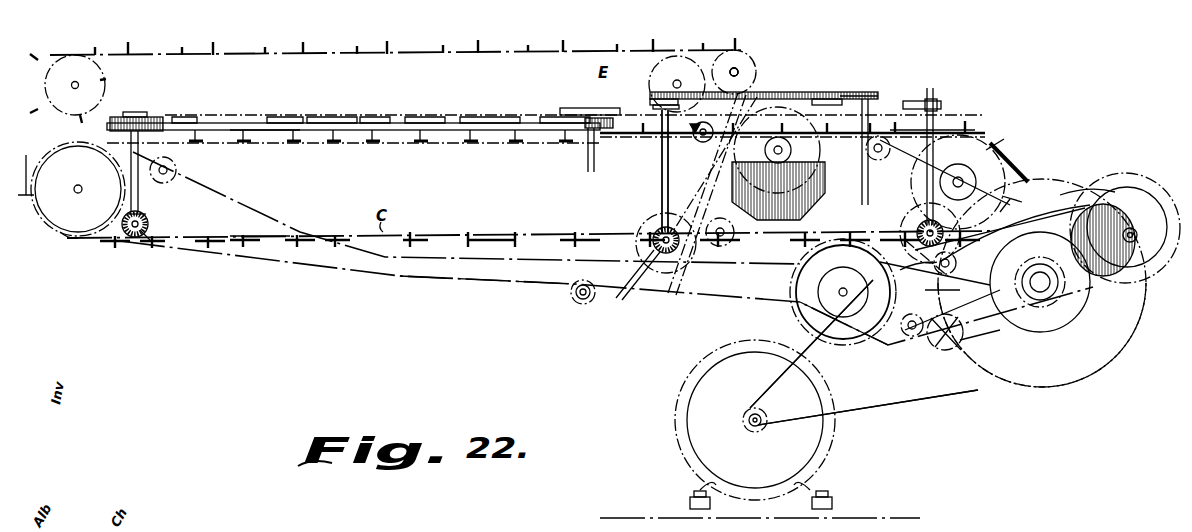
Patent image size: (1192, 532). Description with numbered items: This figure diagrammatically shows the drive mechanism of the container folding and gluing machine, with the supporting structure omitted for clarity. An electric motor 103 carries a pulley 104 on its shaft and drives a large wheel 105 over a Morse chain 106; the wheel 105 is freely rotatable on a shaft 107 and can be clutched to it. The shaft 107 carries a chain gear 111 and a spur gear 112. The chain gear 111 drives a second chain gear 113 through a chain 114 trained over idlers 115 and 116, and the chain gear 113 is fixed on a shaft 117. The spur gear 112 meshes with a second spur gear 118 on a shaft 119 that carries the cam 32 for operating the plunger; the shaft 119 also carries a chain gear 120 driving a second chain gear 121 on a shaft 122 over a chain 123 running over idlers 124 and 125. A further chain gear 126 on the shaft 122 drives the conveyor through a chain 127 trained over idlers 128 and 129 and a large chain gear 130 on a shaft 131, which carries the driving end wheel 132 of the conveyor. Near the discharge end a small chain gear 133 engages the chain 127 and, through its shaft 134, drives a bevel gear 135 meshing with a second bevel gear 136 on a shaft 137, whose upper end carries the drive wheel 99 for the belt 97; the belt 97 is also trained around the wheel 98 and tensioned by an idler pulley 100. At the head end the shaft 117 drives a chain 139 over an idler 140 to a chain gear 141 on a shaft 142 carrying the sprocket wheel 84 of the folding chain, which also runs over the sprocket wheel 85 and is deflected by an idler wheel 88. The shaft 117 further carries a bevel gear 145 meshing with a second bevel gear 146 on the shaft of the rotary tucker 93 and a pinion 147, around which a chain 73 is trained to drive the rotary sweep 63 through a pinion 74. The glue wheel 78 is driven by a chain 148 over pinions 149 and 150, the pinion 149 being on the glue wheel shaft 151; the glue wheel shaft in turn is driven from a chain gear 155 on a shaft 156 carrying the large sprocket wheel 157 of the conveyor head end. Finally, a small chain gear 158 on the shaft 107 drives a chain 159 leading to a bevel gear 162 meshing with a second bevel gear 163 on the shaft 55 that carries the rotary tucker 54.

The sprocket wheel 85 is at (93, 78).
The drive wheel 99 is at (150, 112).
The belt 97 is at (255, 132).
The idler 128 is at (177, 171).
The shaft 131 is at (78, 193).
The driving end wheel 132 is at (44, 222).
The large chain gear 130 is at (68, 236).
The shaft 137 is at (139, 195).
The shaft 134 is at (130, 236).
The second bevel gear 136 is at (148, 215).
The bevel gear 135 is at (146, 228).
The small chain gear 133 is at (272, 222).
The chain 127 is at (456, 279).
The idler 129 is at (573, 304).
The idler wheel 88 is at (680, 58).
The sprocket wheel 84 is at (744, 58).
The chain gear 141 is at (737, 72).
The shaft 142 is at (748, 68).
The pinion 147 is at (650, 94).
The wheel 98 is at (652, 106).
The glue wheel shaft 151 is at (828, 105).
The idler 140 is at (669, 145).
The second bevel gear 146 is at (665, 215).
The rotary tucker 93 is at (658, 110).
The chain 139 is at (742, 104).
The pinion 149 is at (790, 160).
The idler 115 is at (778, 191).
The glue wheel 78 is at (800, 96).
The chain 73 is at (864, 98).
The sprocket 74 is at (930, 88).
The rotary sweep 63 is at (905, 103).
The rotary tucker 54 is at (942, 104).
The shaft 55 is at (944, 112).
The pinion 150 is at (882, 162).
The chain 148 is at (918, 225).
The shaft 156 is at (975, 180).
The large sprocket wheel 157 is at (990, 143).
The chain gear 155 is at (1017, 157).
The second bevel gear 163 is at (1015, 195).
The chain 159 is at (1022, 203).
The idler pulley 100 is at (997, 223).
The second spur gear 118 is at (1117, 187).
The shaft 119 is at (1130, 235).
The cam 32 is at (1078, 210).
The shaft 107 is at (1065, 315).
The chain gear 120 is at (1085, 296).
The small chain gear 158 is at (1041, 297).
The spur gear 112 is at (1039, 292).
The large wheel 105 is at (1005, 382).
The Morse chain 106 is at (884, 410).
The electric motor 103 is at (698, 406).
The pulley 104 is at (748, 430).
The second chain gear 121 is at (830, 332).
The shaft 122 is at (838, 292).
The chain gear 126 is at (800, 305).
The second chain gear 113 is at (695, 265).
The bevel gear 145 is at (632, 284).
The shaft 117 is at (665, 296).
The idler 124 is at (948, 272).
The bevel gear 162 is at (915, 268).
The chain 114 is at (910, 318).
The chain gear 111 is at (950, 296).
The idler 116 is at (918, 340).
The idler 125 is at (968, 338).
The chain 123 is at (886, 345).